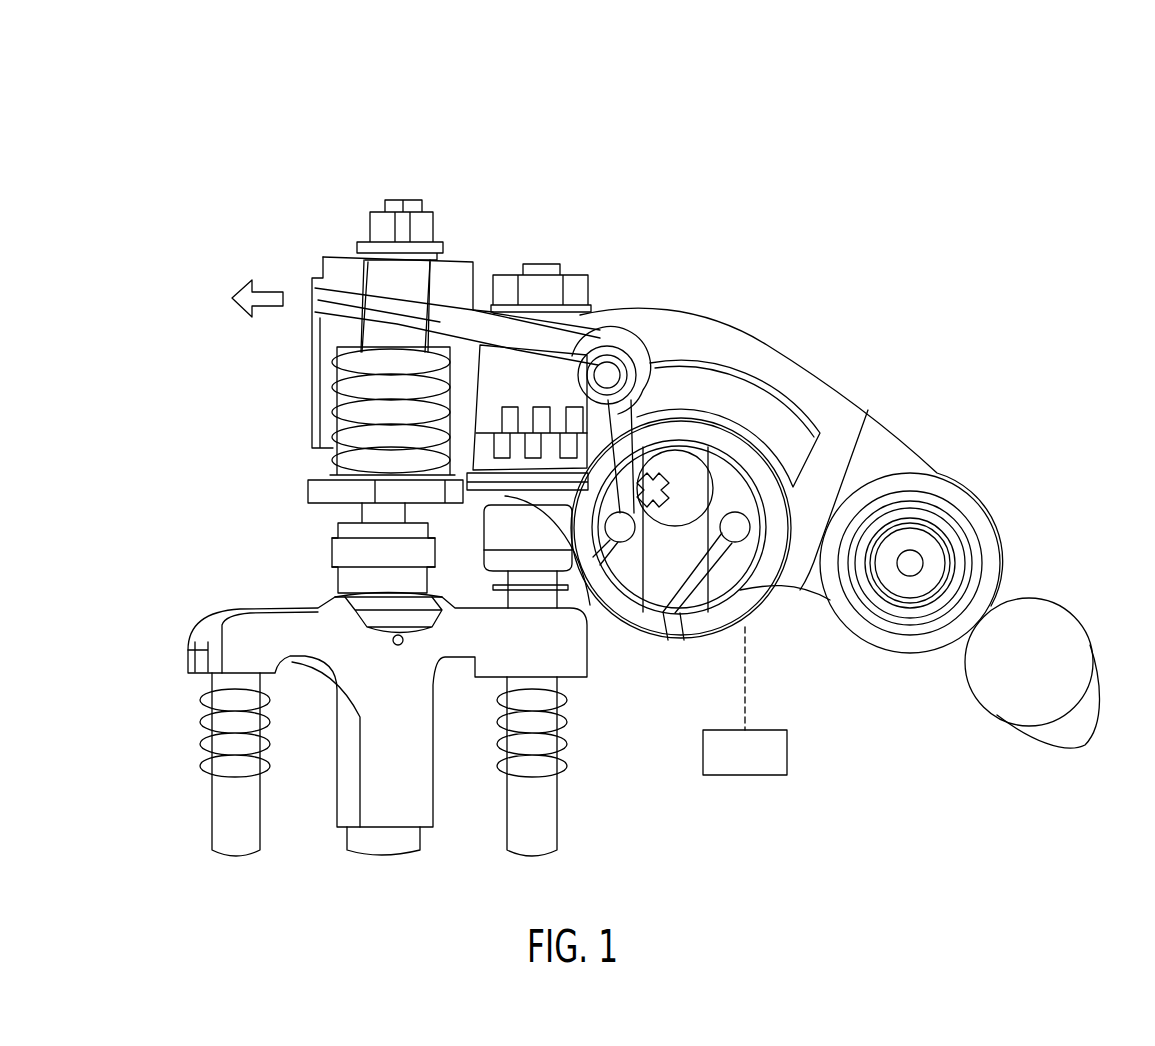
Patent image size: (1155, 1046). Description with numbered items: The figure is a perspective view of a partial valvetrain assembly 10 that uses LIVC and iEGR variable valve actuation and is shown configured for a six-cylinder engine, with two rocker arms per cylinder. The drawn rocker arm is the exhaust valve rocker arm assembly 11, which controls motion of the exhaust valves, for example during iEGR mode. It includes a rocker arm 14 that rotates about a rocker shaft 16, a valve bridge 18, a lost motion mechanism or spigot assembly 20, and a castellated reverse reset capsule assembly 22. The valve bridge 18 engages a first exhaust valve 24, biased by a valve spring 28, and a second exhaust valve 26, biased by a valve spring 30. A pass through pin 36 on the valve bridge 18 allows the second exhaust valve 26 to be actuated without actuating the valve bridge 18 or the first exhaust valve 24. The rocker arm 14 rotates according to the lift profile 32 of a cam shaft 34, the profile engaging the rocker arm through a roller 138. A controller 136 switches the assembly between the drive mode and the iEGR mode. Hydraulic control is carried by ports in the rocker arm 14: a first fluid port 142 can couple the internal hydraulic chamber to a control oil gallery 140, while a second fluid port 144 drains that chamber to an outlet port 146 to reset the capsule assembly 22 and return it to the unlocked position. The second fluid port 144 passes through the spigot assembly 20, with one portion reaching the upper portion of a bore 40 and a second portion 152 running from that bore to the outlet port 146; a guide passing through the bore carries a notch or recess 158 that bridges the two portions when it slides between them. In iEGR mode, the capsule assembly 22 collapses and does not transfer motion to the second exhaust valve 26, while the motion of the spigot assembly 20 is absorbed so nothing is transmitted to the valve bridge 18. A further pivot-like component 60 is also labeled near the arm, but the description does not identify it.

The partial valvetrain assembly 10 is at (774, 110).
The exhaust valve rocker arm assembly 11 is at (918, 331).
The rocker arm 14 is at (775, 345).
The rocker shaft 16 is at (738, 590).
The valve bridge 18 is at (222, 628).
The lost motion spigot assembly 20 is at (395, 176).
The castellated reverse reset capsule assembly 22 is at (538, 233).
The first exhaust valve 24 is at (210, 828).
The second exhaust valve 26 is at (557, 827).
The valve spring 28 is at (203, 744).
The valve spring 30 is at (565, 744).
The lift profile 32 is at (1100, 716).
The cam shaft 34 is at (1063, 630).
The pass through pin 36 is at (512, 603).
The bore 40 is at (298, 408).
The pivot pin 60 is at (612, 340).
The controller 136 is at (788, 753).
The roller 138 is at (993, 517).
The control oil gallery 140 is at (620, 530).
The first fluid port 142 is at (637, 420).
The second fluid port 144 is at (470, 320).
The outlet port 146 is at (312, 292).
The second portion 152 is at (345, 300).
The recess 158 is at (432, 305).